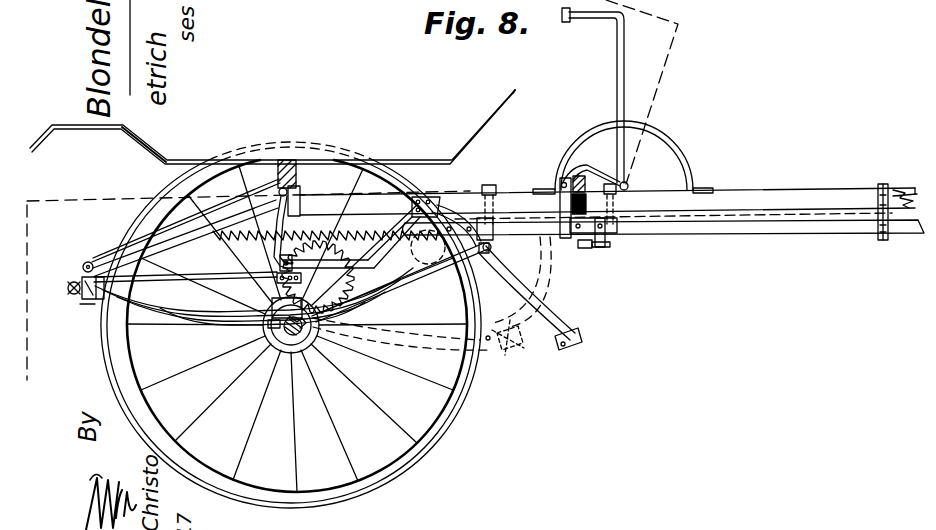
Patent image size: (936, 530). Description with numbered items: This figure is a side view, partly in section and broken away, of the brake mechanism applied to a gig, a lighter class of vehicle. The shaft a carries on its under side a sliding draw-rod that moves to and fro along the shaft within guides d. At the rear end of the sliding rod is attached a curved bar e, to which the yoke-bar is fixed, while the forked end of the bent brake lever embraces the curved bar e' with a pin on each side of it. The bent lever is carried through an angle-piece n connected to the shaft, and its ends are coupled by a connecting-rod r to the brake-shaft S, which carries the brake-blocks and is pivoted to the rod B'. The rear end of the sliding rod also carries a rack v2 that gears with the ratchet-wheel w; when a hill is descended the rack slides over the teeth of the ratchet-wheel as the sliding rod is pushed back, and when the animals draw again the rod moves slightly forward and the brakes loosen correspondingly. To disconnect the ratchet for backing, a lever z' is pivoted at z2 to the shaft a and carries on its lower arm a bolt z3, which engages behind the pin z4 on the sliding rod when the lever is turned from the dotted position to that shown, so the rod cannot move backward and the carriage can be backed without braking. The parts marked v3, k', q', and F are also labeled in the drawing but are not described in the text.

The shaft a is at (608, 203).
The guides d is at (664, 239).
The curved bar e is at (526, 291).
The curved bar e' is at (582, 335).
The lever z' is at (620, 92).
The pivot z2 is at (630, 184).
The bolt z3 is at (554, 190).
The pin z4 is at (574, 239).
The connecting-rod r is at (185, 269).
The angle-piece n is at (166, 245).
The rod B' is at (185, 220).
The brake-shaft S is at (82, 274).
The rack v2 is at (224, 232).
The pawl link v3 is at (265, 228).
The ratchet-wheel w is at (363, 271).
The spring link bar k' is at (293, 284).
The wheel axle q' is at (277, 348).
The frame reference line F is at (245, 280).